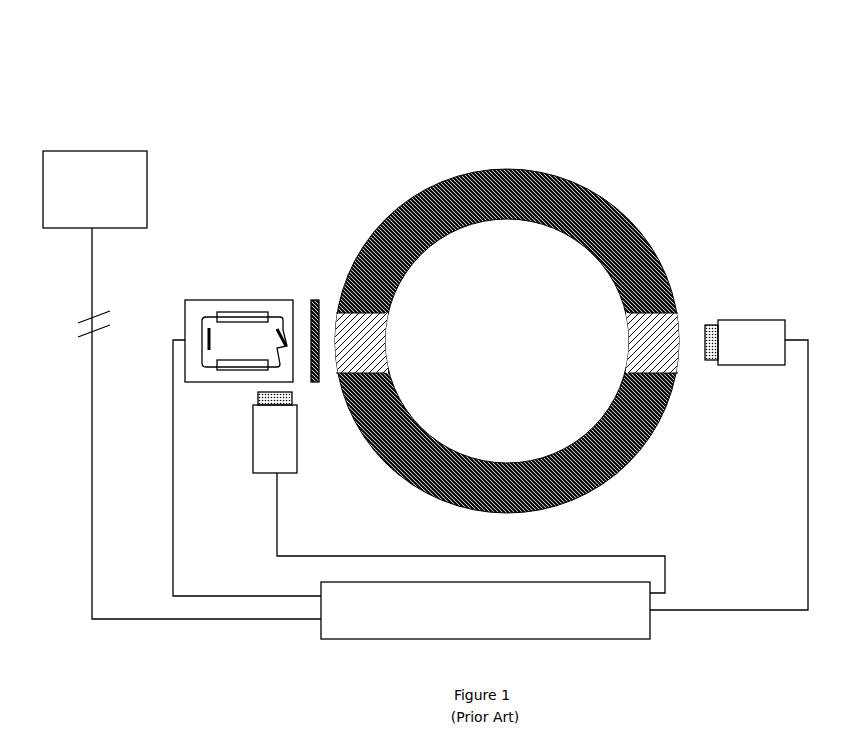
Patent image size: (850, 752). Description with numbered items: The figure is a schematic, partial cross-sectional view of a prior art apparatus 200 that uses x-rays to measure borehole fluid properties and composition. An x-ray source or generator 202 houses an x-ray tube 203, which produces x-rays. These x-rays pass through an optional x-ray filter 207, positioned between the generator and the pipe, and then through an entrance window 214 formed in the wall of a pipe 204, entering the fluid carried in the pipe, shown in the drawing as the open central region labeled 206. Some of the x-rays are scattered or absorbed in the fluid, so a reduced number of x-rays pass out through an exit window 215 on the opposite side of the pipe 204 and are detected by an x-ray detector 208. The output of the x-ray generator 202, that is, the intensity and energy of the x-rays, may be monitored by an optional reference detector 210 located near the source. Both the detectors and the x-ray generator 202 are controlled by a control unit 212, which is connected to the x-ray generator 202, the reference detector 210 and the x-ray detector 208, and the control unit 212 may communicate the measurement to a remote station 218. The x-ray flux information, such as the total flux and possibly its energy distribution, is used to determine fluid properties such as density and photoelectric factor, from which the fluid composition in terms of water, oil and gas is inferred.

The prior art apparatus 200 is at (542, 127).
The x-ray source 202 is at (257, 300).
The x-ray tube 203 is at (244, 341).
The pipe 204 is at (612, 197).
The bore / central opening 206 is at (493, 333).
The x-ray filter 207 is at (314, 302).
The x-ray detector 208 is at (750, 320).
The reference detector 210 is at (253, 442).
The control unit 212 is at (564, 489).
The entrance window 214 is at (340, 305).
The exit window 215 is at (677, 305).
The remote station 218 is at (182, 385).